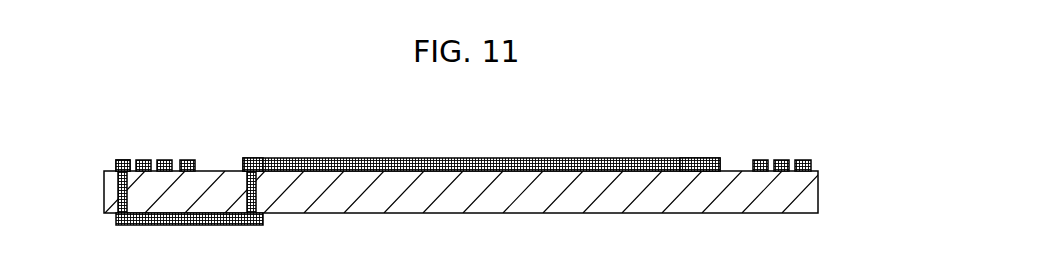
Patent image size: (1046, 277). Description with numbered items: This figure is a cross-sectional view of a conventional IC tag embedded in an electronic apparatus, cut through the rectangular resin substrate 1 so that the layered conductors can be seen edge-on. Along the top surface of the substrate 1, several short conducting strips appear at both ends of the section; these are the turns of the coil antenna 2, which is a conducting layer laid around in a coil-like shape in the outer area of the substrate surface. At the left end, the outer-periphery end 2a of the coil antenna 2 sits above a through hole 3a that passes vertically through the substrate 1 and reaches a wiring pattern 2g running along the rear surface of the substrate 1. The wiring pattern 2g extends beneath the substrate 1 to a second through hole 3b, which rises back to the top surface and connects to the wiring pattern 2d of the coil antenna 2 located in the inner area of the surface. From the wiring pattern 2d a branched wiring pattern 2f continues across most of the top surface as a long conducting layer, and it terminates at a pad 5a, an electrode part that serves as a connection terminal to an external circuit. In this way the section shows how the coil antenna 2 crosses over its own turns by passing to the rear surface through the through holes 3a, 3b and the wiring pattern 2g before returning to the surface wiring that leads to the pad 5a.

The substrate 1 is at (818, 184).
The coil antenna 2 is at (202, 155).
The end of the coil antenna 2a is at (117, 163).
The wiring pattern 2d is at (250, 158).
The wiring pattern 2f is at (474, 158).
The wiring pattern 2g is at (187, 225).
The via conductor 3a is at (118, 184).
The through hole 3b is at (262, 188).
The pad 5a is at (691, 158).